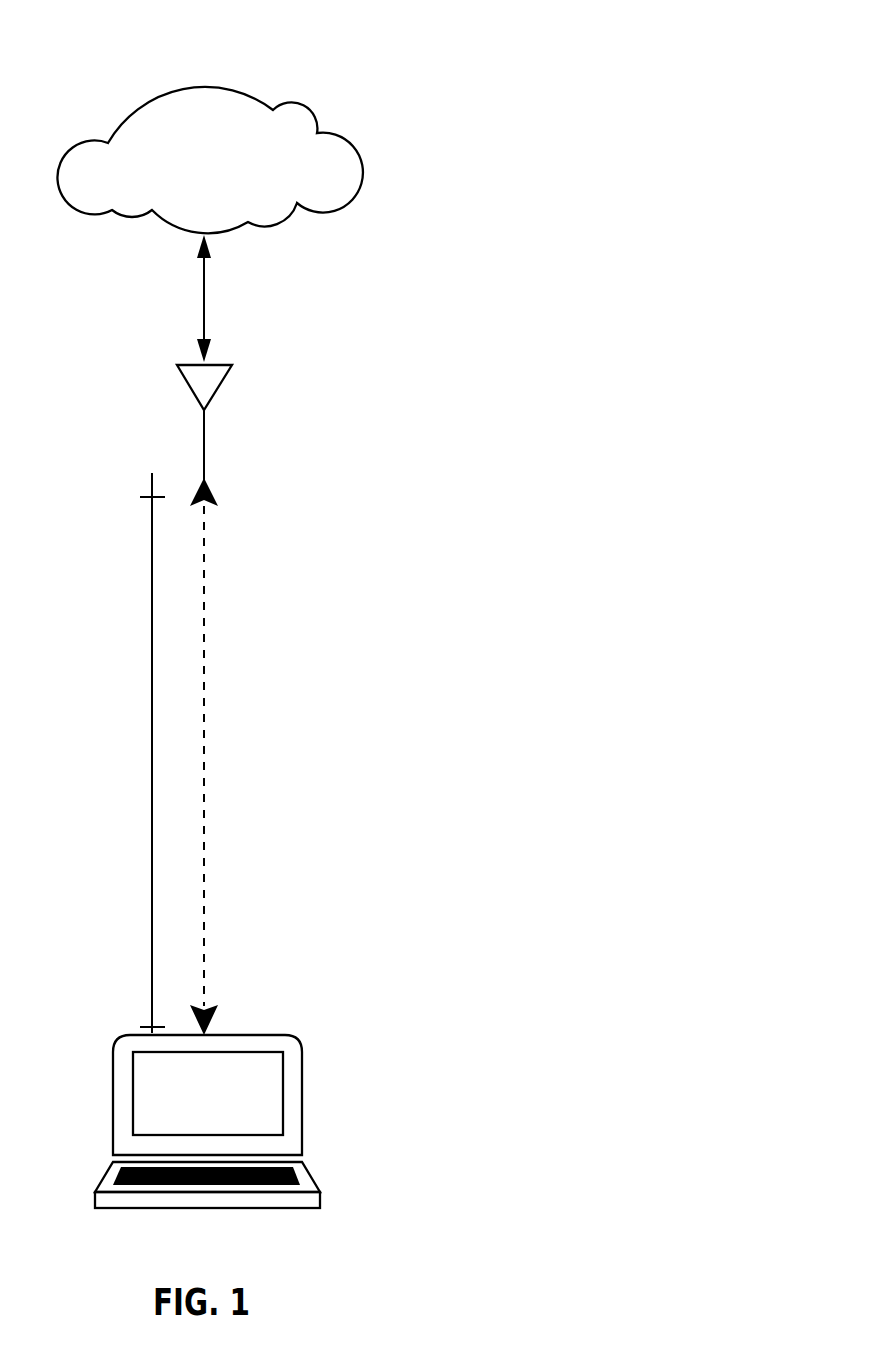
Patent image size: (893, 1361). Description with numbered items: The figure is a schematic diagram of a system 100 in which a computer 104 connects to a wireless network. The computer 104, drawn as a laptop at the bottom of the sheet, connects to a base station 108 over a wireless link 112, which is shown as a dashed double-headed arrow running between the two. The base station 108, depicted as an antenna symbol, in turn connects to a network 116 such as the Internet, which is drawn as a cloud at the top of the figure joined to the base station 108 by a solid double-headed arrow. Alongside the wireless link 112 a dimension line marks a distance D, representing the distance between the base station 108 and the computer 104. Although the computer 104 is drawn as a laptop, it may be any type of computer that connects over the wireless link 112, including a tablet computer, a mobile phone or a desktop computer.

The system 100 is at (384, 73).
The computer 104 is at (232, 1107).
The base station 108 is at (288, 445).
The wireless link 112 is at (232, 777).
The network 116 is at (243, 173).
The distance D is at (142, 777).